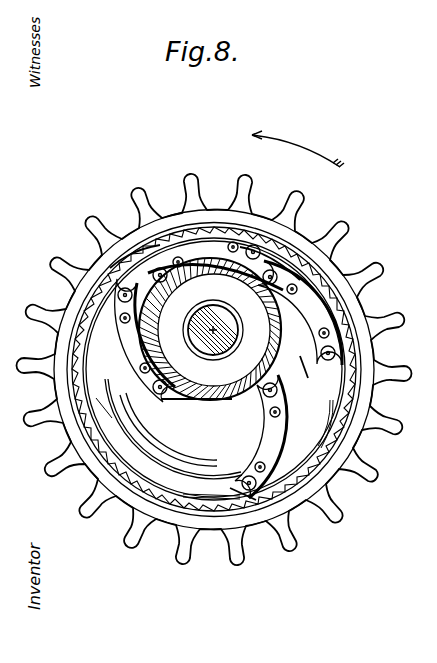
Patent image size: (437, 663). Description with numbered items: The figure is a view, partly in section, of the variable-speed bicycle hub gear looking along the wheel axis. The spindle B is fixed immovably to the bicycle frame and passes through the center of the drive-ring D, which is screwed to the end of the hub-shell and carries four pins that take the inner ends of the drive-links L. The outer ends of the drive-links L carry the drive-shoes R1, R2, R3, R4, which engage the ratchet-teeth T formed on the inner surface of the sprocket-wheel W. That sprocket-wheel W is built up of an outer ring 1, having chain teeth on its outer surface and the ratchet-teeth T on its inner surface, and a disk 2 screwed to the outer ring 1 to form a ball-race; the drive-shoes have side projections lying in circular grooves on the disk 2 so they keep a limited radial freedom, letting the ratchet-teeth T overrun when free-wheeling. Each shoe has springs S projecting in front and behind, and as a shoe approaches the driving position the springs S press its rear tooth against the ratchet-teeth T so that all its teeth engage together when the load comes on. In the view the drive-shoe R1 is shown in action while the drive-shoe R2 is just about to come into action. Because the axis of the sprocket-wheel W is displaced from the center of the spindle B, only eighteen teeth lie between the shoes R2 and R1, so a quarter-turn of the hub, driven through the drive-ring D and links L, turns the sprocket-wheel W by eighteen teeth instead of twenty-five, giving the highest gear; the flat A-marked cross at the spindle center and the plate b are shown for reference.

The sprocket-wheel W is at (214, 369).
The outer ring 1 is at (214, 370).
The disk 2 is at (214, 369).
The ratchet-teeth T is at (357, 350).
The carrier plate b is at (168, 429).
The drive-ring D is at (210, 339).
The spindle B is at (226, 330).
The axis of shaft A is at (208, 372).
The drive-links L is at (228, 370).
The springs S is at (326, 440).
The drive-shoe R1 is at (285, 238).
The drive-shoe R2 is at (303, 370).
The roller R3 is at (236, 492).
The roller R4 is at (132, 275).